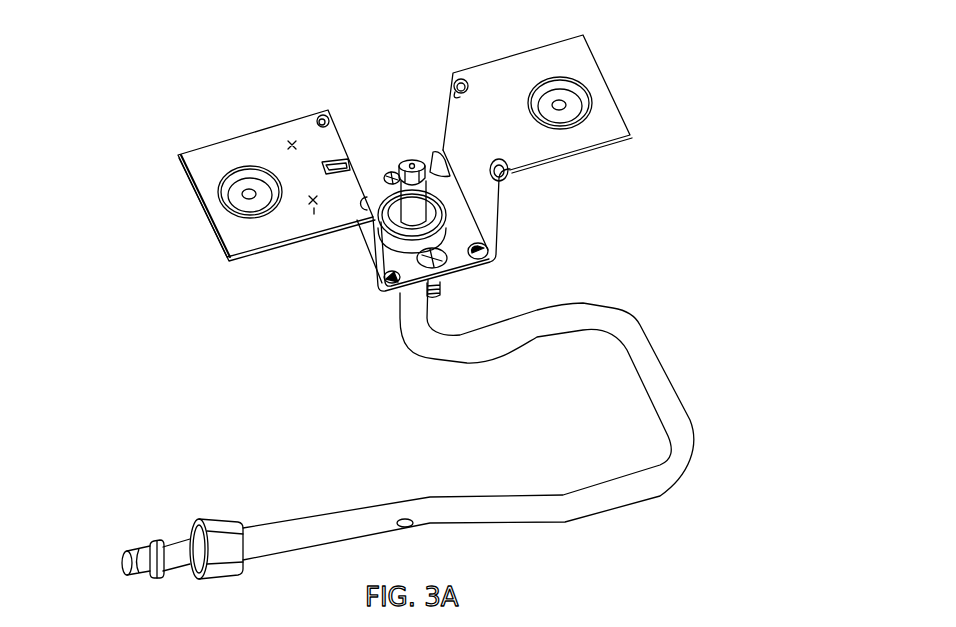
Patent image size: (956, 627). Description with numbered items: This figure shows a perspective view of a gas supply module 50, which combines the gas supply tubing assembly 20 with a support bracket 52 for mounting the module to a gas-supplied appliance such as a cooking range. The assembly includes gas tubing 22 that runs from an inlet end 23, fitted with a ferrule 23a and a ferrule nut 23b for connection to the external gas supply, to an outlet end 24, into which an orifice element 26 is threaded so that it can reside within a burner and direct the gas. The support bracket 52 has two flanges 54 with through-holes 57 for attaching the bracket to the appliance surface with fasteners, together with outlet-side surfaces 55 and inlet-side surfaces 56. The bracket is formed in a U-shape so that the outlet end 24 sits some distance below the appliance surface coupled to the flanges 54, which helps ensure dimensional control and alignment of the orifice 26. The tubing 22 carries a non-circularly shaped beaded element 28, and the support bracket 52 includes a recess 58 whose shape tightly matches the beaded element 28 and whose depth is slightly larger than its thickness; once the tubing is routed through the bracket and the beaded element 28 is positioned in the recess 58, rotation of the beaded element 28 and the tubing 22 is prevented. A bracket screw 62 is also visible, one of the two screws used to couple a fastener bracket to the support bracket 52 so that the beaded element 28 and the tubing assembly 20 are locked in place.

The gas supply tubing assembly 20 is at (685, 402).
The gas tubing 22 is at (652, 365).
The inlet end 23 is at (123, 552).
The ferrule 23a is at (146, 540).
The ferrule nut 23b is at (223, 520).
The outlet end 24 is at (376, 272).
The orifice element 26 is at (412, 163).
The beaded element 28 is at (440, 207).
The gas supply module 50 is at (660, 263).
The support bracket 52 is at (577, 63).
The flanges 54 is at (200, 160).
The outlet-side surfaces 55 is at (292, 146).
The inlet-side surfaces 56 is at (315, 222).
The through-holes 57 is at (250, 192).
The recess 58 is at (461, 97).
The bracket screws 62 is at (450, 255).